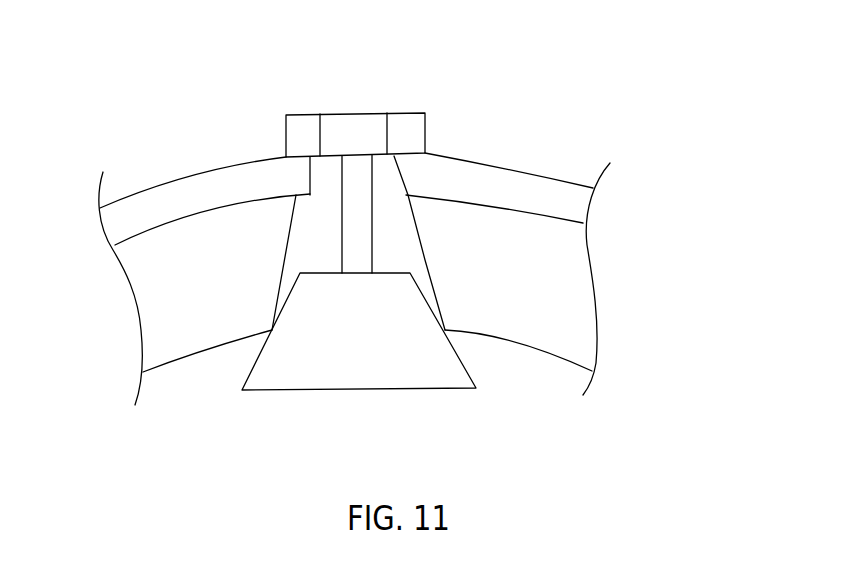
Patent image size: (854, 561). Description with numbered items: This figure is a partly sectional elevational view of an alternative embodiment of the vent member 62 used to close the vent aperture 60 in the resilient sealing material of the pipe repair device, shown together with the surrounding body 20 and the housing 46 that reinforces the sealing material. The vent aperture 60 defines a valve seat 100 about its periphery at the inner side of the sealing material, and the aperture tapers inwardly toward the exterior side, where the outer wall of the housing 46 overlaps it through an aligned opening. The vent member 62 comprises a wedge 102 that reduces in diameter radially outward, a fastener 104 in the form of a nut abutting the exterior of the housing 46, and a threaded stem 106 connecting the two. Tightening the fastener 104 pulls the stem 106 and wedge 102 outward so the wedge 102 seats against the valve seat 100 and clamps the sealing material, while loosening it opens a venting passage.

The housing body 20 is at (568, 282).
The housing 46 is at (547, 172).
The vent aperture 60 is at (432, 242).
The vent member 62 is at (310, 224).
The valve seat 100 is at (445, 328).
The wedge 102 is at (337, 367).
The fastener 104 is at (350, 128).
The threaded stem 106 is at (356, 201).